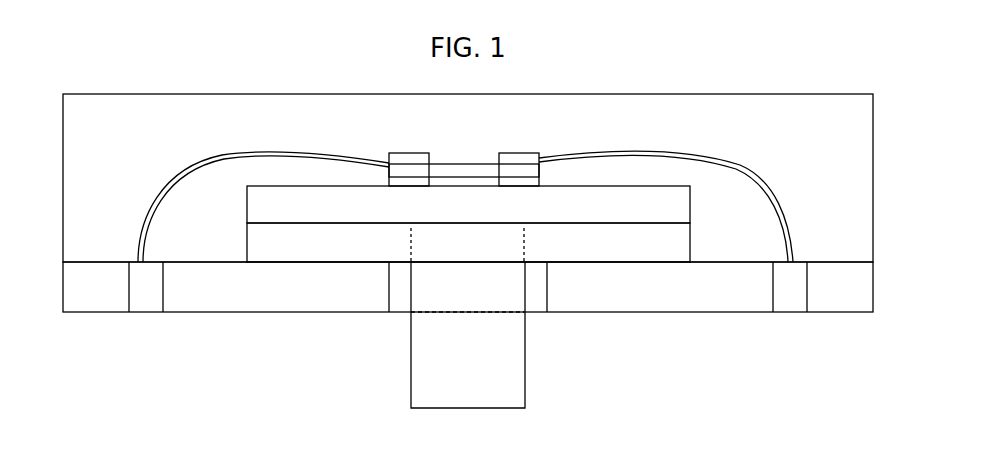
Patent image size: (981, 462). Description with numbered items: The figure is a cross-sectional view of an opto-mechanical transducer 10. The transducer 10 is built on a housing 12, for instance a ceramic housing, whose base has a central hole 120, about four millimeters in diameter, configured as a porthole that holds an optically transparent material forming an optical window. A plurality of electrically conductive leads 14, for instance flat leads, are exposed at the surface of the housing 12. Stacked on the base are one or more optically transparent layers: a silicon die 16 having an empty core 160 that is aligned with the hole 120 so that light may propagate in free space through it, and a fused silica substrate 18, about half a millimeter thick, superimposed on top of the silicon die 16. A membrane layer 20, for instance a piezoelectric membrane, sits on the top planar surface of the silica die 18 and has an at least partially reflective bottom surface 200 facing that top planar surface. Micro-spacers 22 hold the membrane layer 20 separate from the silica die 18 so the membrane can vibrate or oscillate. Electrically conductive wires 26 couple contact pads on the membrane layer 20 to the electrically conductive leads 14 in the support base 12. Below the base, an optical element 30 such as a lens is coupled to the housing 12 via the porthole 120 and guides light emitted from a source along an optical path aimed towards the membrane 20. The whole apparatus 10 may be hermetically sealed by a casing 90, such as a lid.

The opto-mechanical transducer 10 is at (181, 78).
The casing 90 is at (849, 120).
The housing 12 is at (696, 300).
The electrically conductive leads 14 is at (147, 303).
The optical element 30 is at (527, 345).
The central hole 120 is at (453, 317).
The silicon die 16 is at (247, 240).
The fused silica substrate 18 is at (247, 205).
The empty core 160 is at (442, 243).
The membrane layer 20 is at (465, 163).
The spacers 22 is at (389, 180).
The bottom surface 200 is at (455, 177).
The electrically conductive wires 26 is at (143, 220).